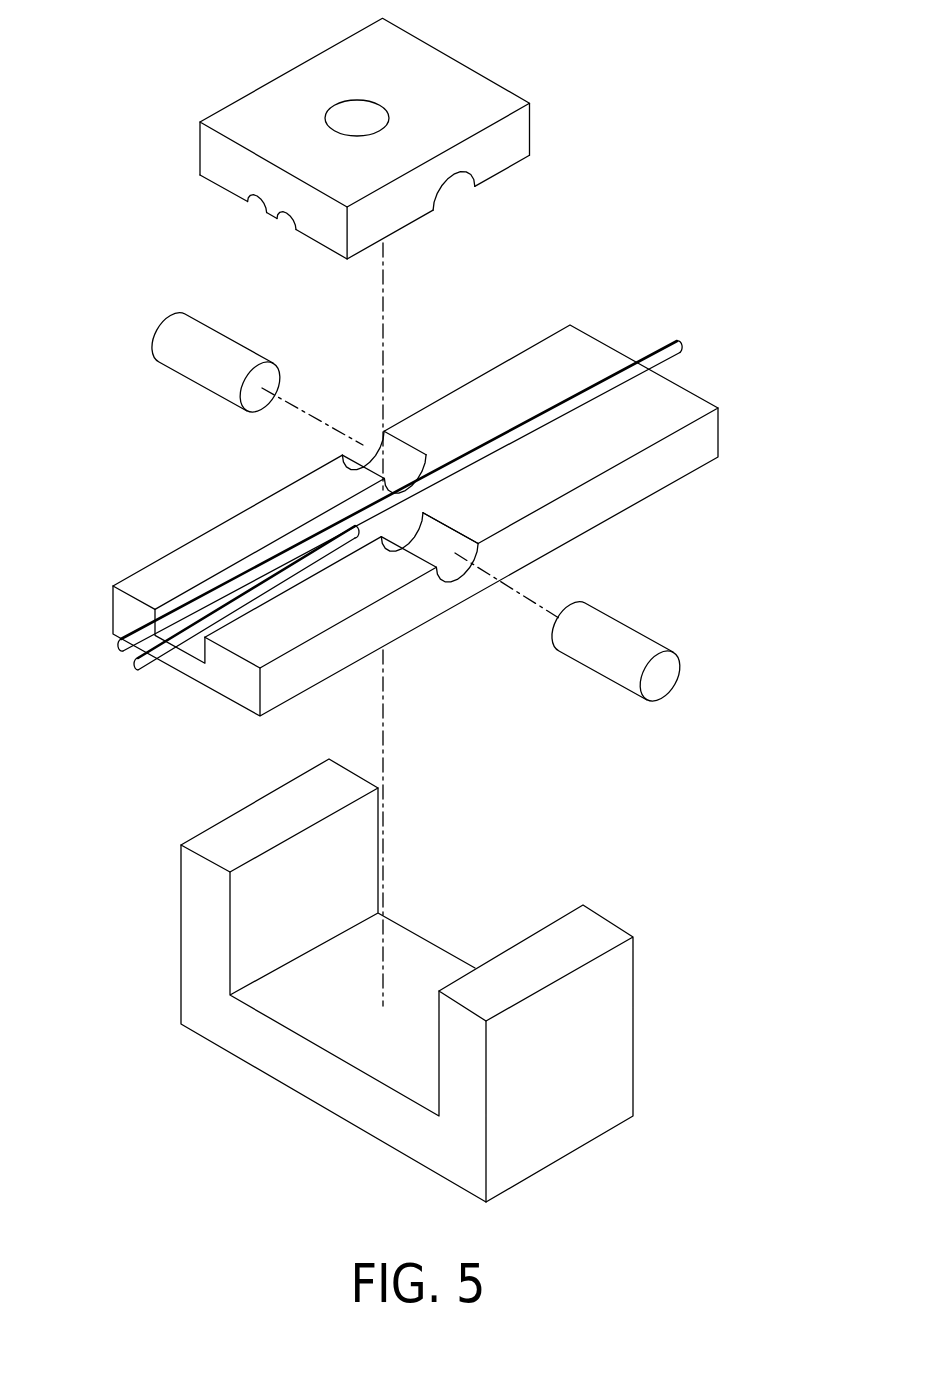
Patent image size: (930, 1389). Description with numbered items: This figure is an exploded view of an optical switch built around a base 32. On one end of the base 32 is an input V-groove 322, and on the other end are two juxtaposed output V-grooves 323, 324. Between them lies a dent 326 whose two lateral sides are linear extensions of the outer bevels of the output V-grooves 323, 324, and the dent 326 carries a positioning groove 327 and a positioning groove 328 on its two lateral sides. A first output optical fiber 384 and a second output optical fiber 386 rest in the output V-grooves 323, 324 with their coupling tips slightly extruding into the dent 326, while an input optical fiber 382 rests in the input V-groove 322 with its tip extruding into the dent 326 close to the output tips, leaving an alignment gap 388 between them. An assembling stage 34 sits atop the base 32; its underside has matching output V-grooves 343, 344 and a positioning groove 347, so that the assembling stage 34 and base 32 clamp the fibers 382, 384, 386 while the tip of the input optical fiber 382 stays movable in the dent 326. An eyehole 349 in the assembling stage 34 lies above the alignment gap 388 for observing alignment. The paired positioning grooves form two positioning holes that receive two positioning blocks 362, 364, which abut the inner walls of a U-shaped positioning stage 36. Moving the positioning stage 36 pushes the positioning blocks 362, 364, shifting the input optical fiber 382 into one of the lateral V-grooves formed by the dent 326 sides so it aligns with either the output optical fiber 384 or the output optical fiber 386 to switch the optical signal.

The base 32 is at (409, 528).
The input V-groove 322 is at (580, 390).
The output V-groove 323 is at (233, 630).
The output V-groove 324 is at (200, 595).
The dent 326 is at (500, 463).
The positioning groove 327 is at (453, 552).
The positioning groove 328 is at (402, 460).
The assembling stage 34 is at (358, 137).
The output V-groove 343 is at (283, 222).
The output V-groove 344 is at (257, 195).
The positioning groove 347 is at (463, 180).
The eyehole 349 is at (360, 100).
The U-shaped positioning stage 36 is at (313, 1081).
The positioning block 362 is at (633, 653).
The positioning block 364 is at (173, 330).
The input optical fiber 382 is at (401, 496).
The first output optical fiber 384 is at (285, 614).
The second output optical fiber 386 is at (147, 632).
The alignment gap 388 is at (380, 543).